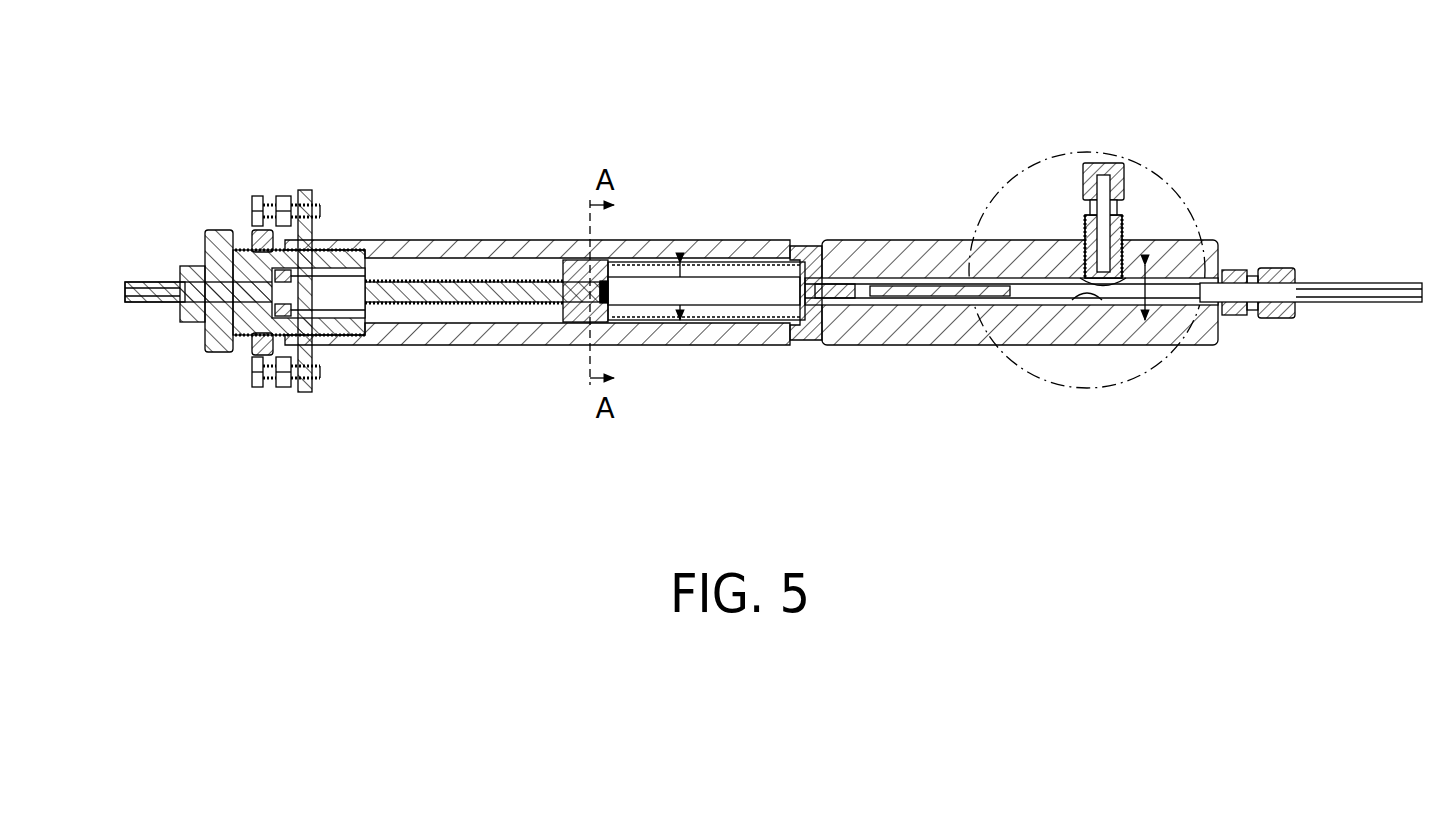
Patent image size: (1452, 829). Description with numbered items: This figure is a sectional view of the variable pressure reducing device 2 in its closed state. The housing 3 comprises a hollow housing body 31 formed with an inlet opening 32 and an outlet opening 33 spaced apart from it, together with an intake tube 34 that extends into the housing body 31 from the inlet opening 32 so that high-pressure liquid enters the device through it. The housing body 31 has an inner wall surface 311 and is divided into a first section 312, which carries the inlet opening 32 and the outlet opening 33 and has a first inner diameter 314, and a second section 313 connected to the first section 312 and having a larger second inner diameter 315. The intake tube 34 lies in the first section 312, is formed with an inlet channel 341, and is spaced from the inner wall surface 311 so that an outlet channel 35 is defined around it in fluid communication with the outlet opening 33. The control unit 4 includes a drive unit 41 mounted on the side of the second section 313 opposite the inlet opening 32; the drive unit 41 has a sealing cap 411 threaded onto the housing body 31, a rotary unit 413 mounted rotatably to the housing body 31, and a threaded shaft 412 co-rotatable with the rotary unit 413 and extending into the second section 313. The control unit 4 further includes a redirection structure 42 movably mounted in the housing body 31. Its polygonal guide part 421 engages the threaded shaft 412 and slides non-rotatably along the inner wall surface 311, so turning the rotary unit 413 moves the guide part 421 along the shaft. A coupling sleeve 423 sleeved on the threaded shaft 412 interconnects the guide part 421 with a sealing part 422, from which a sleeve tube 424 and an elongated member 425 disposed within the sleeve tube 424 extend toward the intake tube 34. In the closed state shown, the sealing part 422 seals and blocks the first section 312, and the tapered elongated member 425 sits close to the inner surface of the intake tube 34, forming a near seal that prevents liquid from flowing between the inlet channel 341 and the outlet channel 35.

The variable pressure reducing device 2 is at (757, 150).
The housing 3 is at (853, 298).
The housing body 31 is at (751, 371).
The inner wall surface 311 is at (724, 262).
The first section 312 is at (1020, 342).
The second section 313 is at (748, 348).
The first inner diameter 314 is at (1160, 305).
The second inner diameter 315 is at (697, 305).
The inlet opening 32 is at (1224, 266).
The outlet opening 33 is at (1105, 163).
The intake tube 34 is at (1311, 290).
The inlet channel 341 is at (1368, 302).
The outlet channel 35 is at (1052, 275).
The control unit 4 is at (228, 265).
The drive unit 41 is at (228, 268).
The sealing cap 411 is at (218, 350).
The threaded shaft 412 is at (148, 282).
The rotary unit 413 is at (183, 320).
The redirection structure 42 is at (475, 308).
The guide part 421 is at (558, 258).
The sealing part 422 is at (796, 262).
The coupling sleeve 423 is at (680, 275).
The sleeve tube 424 is at (905, 280).
The elongated member 425 is at (870, 290).